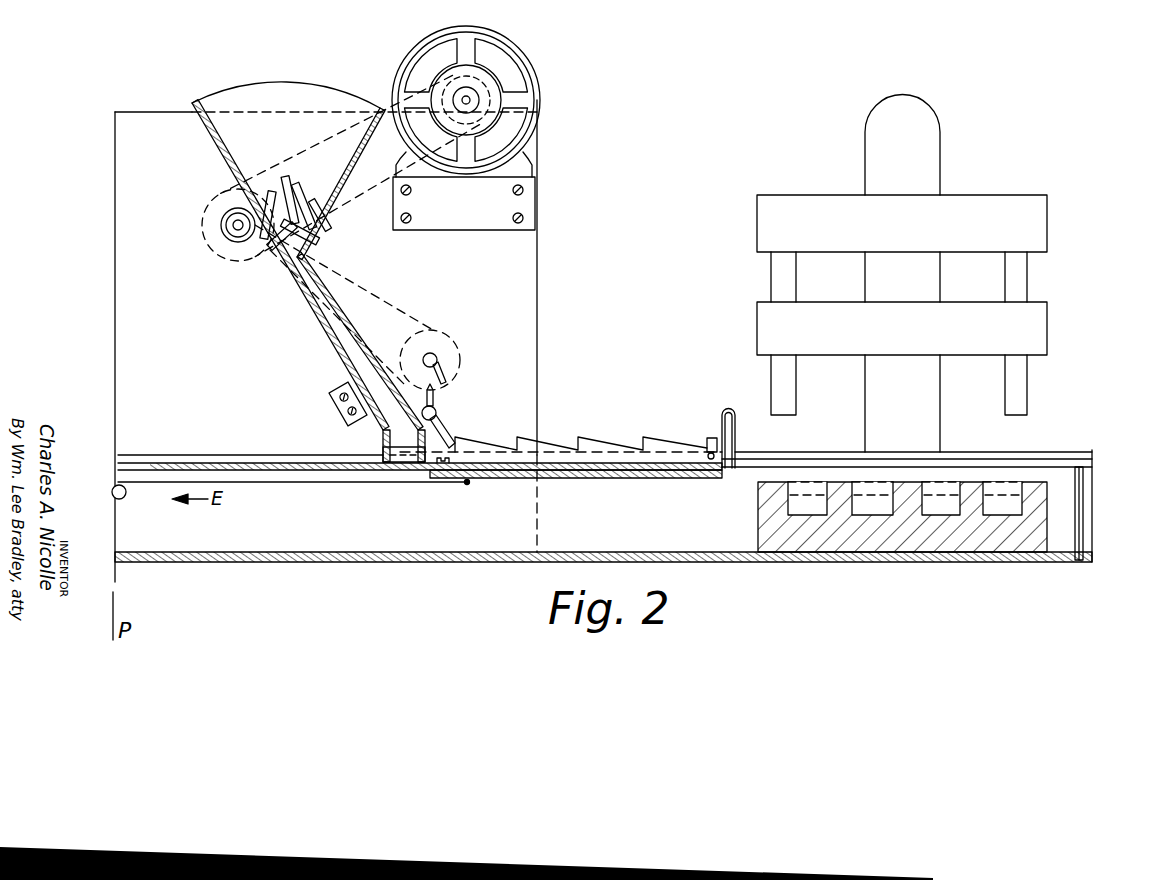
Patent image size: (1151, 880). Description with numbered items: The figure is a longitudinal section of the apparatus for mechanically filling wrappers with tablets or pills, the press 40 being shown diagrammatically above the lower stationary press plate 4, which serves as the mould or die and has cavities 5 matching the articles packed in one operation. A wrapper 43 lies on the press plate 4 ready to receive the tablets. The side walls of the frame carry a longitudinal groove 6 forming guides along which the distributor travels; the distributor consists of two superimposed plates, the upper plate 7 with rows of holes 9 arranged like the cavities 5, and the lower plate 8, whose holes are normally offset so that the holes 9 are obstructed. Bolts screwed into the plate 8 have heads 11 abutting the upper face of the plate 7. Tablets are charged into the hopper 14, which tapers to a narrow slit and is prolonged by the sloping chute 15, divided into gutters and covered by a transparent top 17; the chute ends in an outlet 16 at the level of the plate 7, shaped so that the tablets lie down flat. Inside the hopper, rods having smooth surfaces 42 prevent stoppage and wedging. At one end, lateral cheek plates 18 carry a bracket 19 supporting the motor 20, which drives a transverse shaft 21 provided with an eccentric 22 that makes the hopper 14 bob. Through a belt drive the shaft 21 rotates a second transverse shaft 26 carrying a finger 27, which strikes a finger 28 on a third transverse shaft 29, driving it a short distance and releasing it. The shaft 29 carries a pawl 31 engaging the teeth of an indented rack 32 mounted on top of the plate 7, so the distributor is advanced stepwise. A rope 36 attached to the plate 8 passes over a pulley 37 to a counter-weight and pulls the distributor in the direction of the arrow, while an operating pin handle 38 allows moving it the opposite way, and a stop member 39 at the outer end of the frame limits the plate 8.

The lower stationary press plate 4 is at (930, 533).
The cavities 5 is at (878, 497).
The longitudinal groove 6 is at (793, 466).
The upper plate 7 is at (270, 471).
The lower plate 8 is at (618, 479).
The holes 9 is at (590, 466).
The heads 11 is at (449, 497).
The hopper 14 is at (210, 135).
The sloping chute 15 is at (290, 270).
The outlet 16 is at (248, 422).
The top 17 is at (344, 305).
The lateral cheek plates 18 is at (530, 289).
The bracket 19 is at (515, 205).
The motor 20 is at (525, 54).
The transverse shaft 21 is at (225, 227).
The eccentric 22 is at (243, 212).
The transverse shaft 26 is at (437, 357).
The finger 27 is at (445, 379).
The finger 28 is at (435, 396).
The third transverse shaft 29 is at (437, 413).
The pawl 31 is at (452, 436).
The indented rack 32 is at (647, 448).
The rope 36 is at (345, 484).
The pulley 37 is at (112, 495).
The operating pin handle 38 is at (726, 409).
The stop member 39 is at (1078, 511).
The press 40 is at (902, 274).
The rods having smooth surfaces 42 is at (300, 208).
The wrapper 43 is at (810, 496).